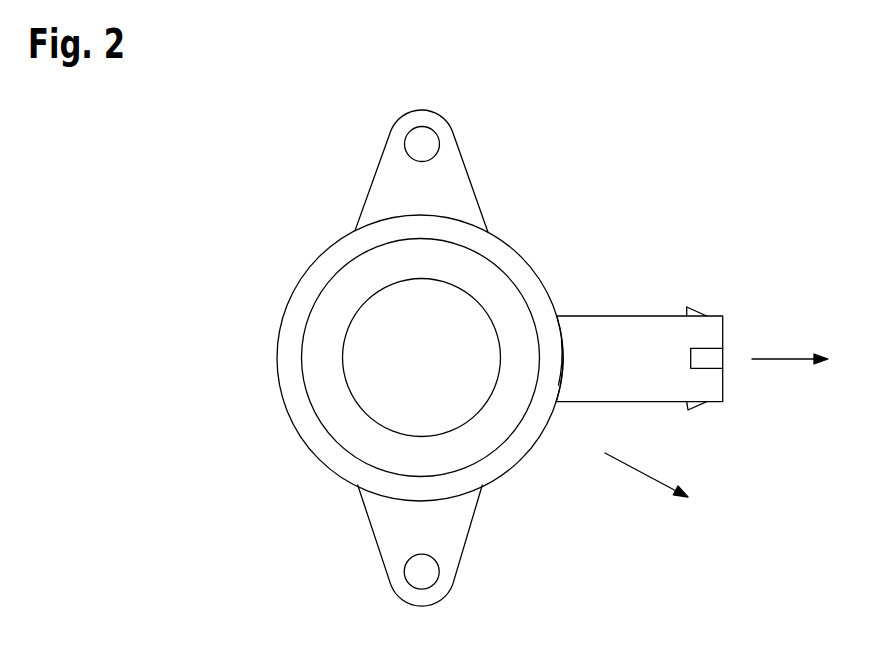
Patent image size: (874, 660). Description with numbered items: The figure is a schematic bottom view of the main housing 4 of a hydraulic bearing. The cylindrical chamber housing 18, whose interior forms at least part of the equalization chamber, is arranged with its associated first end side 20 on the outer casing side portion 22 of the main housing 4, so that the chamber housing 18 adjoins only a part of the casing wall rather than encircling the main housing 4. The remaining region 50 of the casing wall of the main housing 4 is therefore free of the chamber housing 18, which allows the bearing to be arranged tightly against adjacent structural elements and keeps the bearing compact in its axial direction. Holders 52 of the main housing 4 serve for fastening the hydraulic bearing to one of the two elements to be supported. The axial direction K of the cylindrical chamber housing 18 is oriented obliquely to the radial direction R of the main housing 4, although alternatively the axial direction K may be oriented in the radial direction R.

The main housing 4 is at (505, 258).
The cylindrical chamber housing 18 is at (675, 328).
The first end side 20 is at (572, 390).
The outer casing side portion 22 is at (552, 373).
The remaining region 50 is at (312, 458).
The holders 52 is at (459, 130).
The axial direction K is at (790, 341).
The radial direction R is at (659, 480).